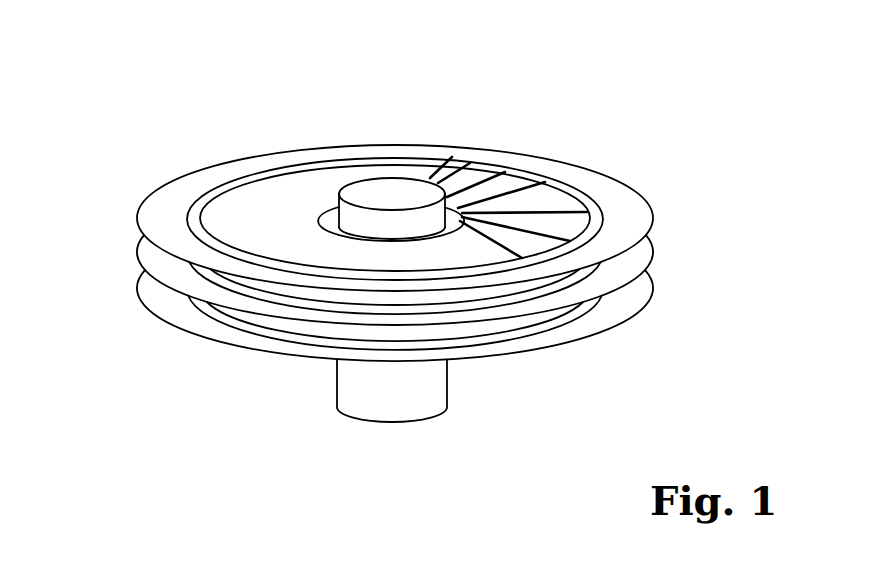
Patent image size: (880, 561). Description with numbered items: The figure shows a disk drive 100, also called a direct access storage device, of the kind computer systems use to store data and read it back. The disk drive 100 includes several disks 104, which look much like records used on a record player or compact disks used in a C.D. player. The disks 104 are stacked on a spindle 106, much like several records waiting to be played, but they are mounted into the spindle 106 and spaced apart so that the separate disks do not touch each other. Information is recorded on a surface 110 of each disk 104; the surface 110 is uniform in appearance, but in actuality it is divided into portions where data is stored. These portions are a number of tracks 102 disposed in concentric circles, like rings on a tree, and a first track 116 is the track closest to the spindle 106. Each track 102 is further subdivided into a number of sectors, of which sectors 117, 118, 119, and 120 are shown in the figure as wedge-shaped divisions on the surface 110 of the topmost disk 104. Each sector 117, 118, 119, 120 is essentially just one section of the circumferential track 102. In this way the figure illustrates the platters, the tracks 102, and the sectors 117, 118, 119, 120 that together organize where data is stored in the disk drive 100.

The disk drive 100 is at (401, 263).
The tracks 102 is at (190, 308).
The disks 104 is at (136, 210).
The spindle 106 is at (390, 180).
The surface 110 is at (290, 196).
The first track 116 is at (380, 237).
The sector 117 is at (449, 156).
The sector 118 is at (474, 177).
The sector 119 is at (518, 183).
The sector 120 is at (567, 205).